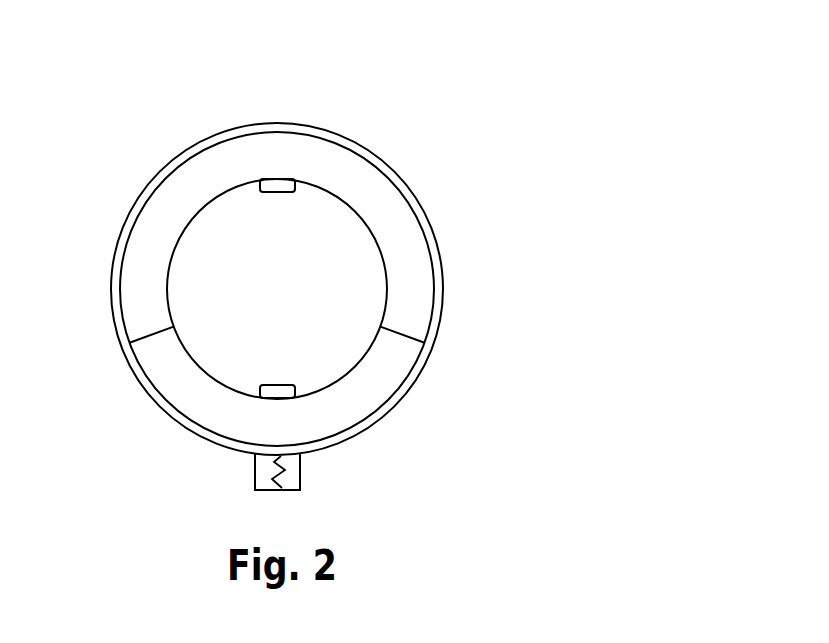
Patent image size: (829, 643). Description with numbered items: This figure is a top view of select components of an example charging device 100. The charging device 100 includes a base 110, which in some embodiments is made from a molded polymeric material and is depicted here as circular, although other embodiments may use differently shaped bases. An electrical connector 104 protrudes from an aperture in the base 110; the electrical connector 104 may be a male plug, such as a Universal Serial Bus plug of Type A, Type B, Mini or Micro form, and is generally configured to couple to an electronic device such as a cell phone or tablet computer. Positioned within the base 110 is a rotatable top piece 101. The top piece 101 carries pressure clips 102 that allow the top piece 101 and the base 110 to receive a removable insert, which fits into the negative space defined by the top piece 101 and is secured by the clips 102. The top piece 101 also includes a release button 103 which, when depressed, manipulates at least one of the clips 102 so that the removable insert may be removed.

The charging device 100 is at (440, 62).
The rotatable top piece 101 is at (182, 210).
The pressure clips 102 is at (300, 390).
The release button 103 is at (137, 363).
The electrical connector 104 is at (315, 480).
The base 110 is at (443, 293).